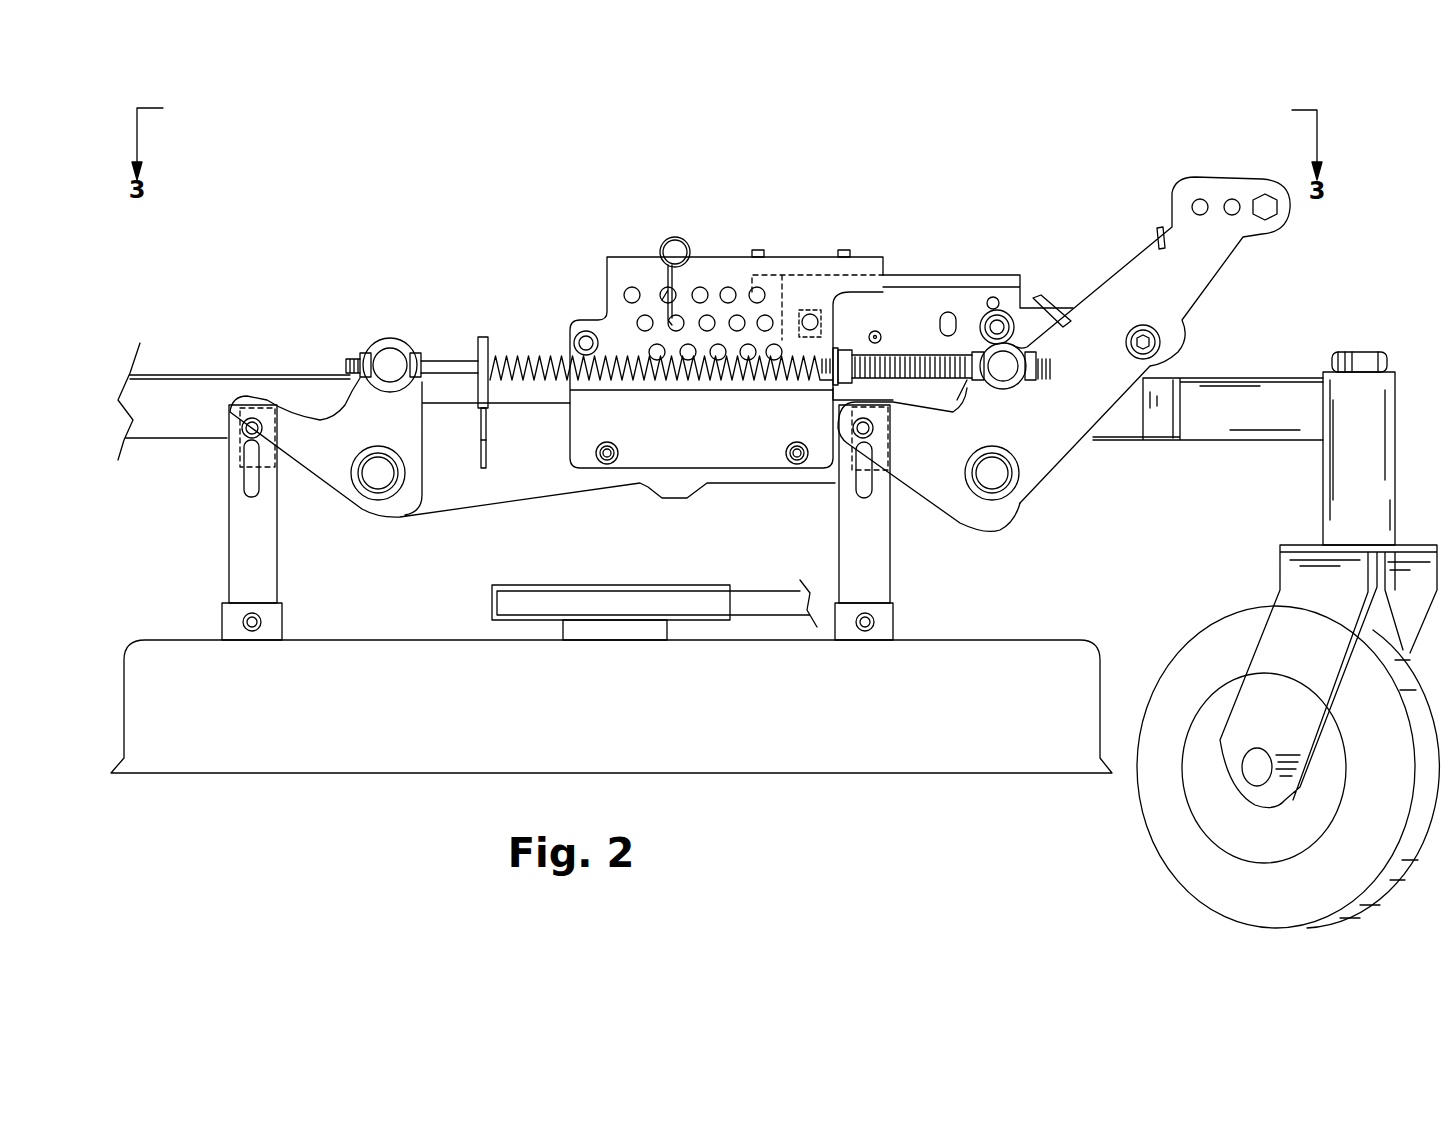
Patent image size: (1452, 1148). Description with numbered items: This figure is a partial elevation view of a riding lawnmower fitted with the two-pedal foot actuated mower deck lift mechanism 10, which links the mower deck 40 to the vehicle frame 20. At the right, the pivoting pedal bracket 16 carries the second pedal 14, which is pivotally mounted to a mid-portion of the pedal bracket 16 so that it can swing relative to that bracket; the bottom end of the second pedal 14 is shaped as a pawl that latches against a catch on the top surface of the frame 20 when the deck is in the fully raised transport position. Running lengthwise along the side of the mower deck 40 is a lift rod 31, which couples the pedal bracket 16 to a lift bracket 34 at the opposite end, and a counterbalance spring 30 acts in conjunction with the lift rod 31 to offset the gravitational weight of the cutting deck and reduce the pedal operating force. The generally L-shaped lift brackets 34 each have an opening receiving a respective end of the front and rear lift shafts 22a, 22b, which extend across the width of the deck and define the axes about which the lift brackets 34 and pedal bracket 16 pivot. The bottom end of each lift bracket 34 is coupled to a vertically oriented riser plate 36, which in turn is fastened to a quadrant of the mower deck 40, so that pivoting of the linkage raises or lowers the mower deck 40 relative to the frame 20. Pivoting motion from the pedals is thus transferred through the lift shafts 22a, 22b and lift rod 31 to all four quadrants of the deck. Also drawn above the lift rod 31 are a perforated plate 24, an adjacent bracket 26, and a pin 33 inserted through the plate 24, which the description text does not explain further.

The two-pedal foot actuated mower deck lift mechanism 10 is at (784, 130).
The second pedal 14 is at (1033, 325).
The pedal bracket 16 is at (1163, 280).
The vehicle frame 20 is at (174, 410).
The front lift shaft 22a is at (987, 477).
The rear lift shaft 22b is at (373, 478).
The height adjustment plate 24 is at (720, 262).
The mounting bracket 26 is at (928, 283).
The counterbalance spring 30 is at (528, 358).
The lift rod 31 is at (450, 366).
The locking pin 33 is at (667, 243).
The lift bracket 34 is at (322, 458).
The riser plate 36 is at (248, 548).
The mower deck 40 is at (850, 727).